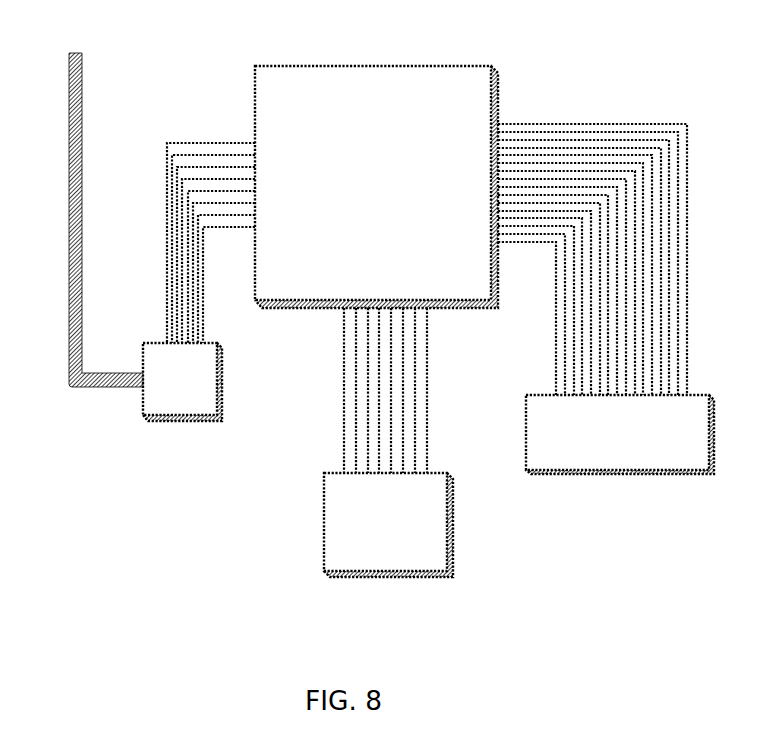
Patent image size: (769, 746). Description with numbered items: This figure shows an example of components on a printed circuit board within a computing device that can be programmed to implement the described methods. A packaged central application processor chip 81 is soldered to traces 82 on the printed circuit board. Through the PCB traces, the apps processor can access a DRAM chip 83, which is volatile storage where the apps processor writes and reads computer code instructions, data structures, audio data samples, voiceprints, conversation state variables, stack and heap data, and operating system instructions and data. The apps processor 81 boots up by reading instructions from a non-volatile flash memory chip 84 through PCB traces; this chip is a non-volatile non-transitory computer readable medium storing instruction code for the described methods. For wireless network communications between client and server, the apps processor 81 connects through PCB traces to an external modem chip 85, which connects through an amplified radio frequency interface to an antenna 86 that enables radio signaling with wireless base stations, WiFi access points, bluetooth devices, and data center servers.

The packaged central application processor chip 81 is at (429, 66).
The traces 82 is at (653, 57).
The DRAM chip 83 is at (677, 477).
The non-volatile flash memory chip 84 is at (410, 578).
The external modem chip 85 is at (198, 423).
The antenna 86 is at (68, 147).